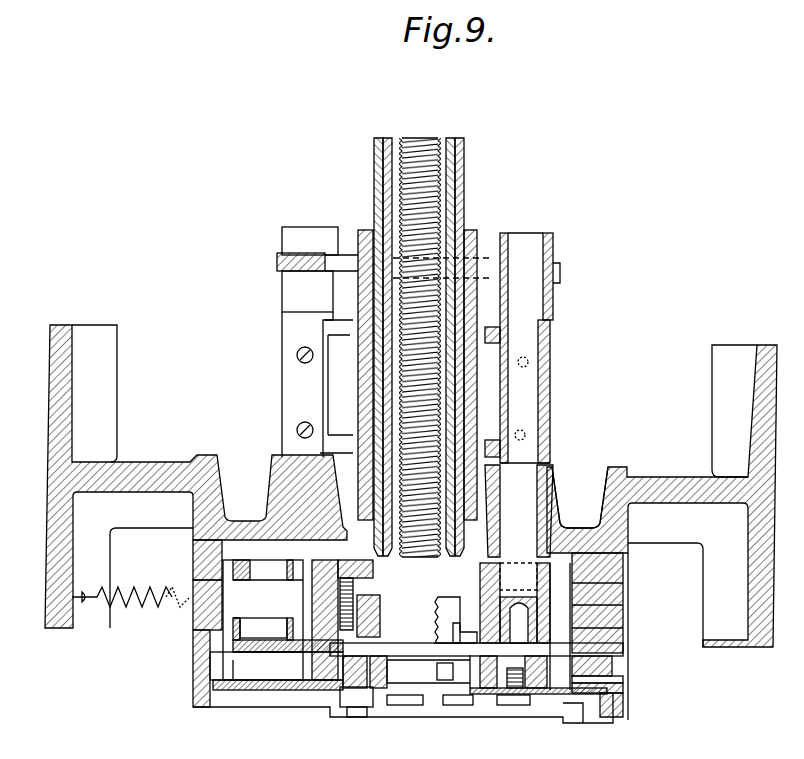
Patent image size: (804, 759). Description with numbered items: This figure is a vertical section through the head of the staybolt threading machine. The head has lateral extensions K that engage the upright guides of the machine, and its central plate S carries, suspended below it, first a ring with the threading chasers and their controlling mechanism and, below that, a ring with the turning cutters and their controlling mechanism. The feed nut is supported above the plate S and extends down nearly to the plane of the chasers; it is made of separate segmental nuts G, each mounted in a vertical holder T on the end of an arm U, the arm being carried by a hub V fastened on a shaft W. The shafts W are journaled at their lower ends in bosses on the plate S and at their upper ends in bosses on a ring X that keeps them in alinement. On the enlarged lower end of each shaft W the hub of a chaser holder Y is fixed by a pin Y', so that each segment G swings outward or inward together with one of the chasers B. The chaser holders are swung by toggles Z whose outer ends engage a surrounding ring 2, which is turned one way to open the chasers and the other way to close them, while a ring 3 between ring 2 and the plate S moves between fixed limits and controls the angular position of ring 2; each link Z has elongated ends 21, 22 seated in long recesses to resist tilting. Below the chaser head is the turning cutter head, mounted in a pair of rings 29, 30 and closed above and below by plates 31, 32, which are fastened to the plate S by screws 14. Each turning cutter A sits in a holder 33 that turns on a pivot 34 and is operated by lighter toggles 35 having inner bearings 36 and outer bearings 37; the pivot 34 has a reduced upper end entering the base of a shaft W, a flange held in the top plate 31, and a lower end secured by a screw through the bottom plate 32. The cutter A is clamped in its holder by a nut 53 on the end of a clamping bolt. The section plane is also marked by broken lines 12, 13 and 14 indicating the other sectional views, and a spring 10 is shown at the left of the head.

The segmental nut G is at (374, 168).
The ring X is at (488, 262).
The hub V is at (282, 381).
The arm U is at (336, 386).
The vertical holder T is at (358, 386).
The shaft W is at (537, 402).
The lateral extension of the head K is at (693, 486).
The central plate S is at (583, 536).
The chaser holder Y is at (492, 616).
The pin Y' is at (515, 588).
The chaser B is at (435, 598).
The toggle Z is at (263, 620).
The turning cutter A is at (437, 671).
The ring 2 is at (193, 625).
The ring 3 is at (193, 561).
The spring 10 is at (131, 583).
The section line 12 is at (740, 739).
The section line 13 is at (784, 646).
The screw 14 is at (749, 690).
The elongated end of link 21 is at (230, 628).
The elongated end of link 22 is at (263, 628).
The ring 29 is at (623, 665).
The ring 30 is at (622, 705).
The top plate 31 is at (622, 627).
The bottom plate 32 is at (560, 700).
The cutter holder 33 is at (618, 683).
The pivot 34 is at (549, 696).
The toggle 35 is at (553, 630).
The inner bearing 36 is at (453, 636).
The outer bearing 37 is at (513, 690).
The nut 53 is at (447, 703).